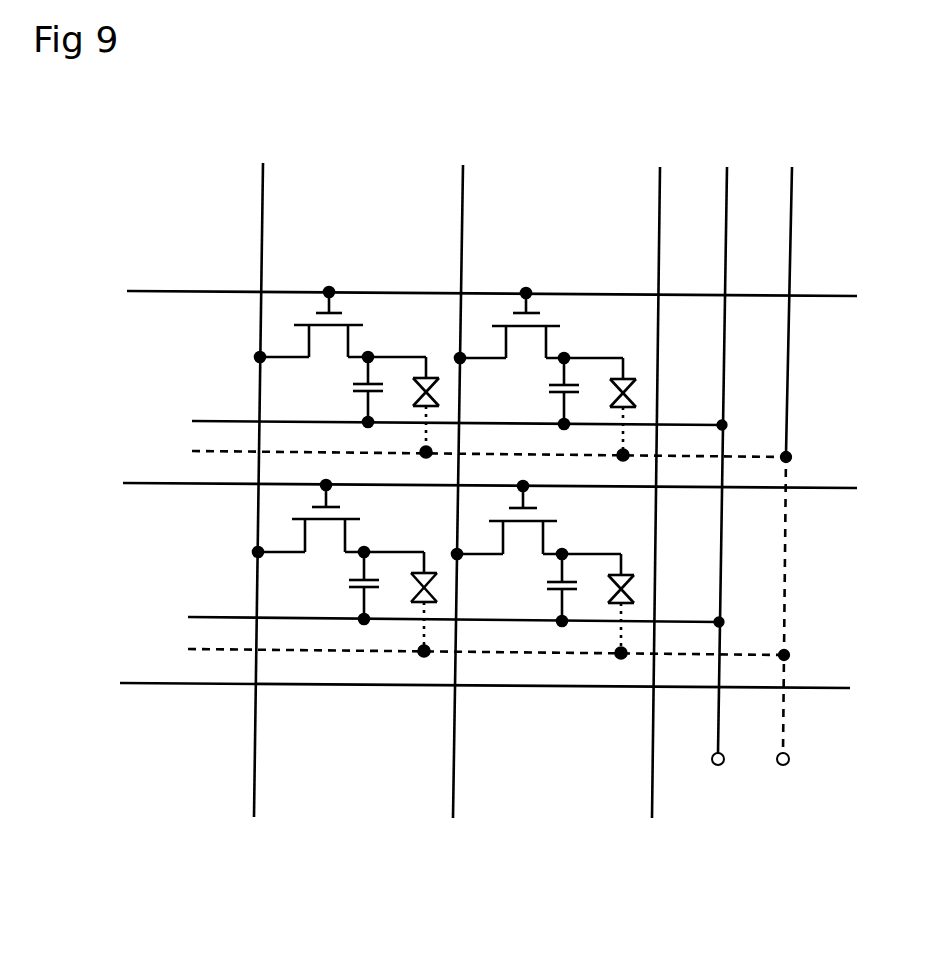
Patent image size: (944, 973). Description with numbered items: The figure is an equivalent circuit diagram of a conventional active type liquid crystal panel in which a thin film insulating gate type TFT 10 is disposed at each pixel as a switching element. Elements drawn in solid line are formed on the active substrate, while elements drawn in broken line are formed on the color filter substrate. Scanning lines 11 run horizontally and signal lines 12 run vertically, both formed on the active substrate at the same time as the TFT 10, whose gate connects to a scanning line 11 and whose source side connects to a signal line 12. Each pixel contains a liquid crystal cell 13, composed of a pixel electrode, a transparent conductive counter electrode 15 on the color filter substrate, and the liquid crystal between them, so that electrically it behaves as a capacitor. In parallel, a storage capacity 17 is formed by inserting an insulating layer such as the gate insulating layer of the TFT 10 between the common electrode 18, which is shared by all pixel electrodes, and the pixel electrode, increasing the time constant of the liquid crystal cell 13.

The TFT 10 is at (345, 313).
The scanning line 11 is at (153, 294).
The signal line 12 is at (265, 193).
The liquid crystal cell 13 is at (436, 388).
The counter electrode 15 is at (785, 775).
The storage capacity 17 is at (343, 388).
The common electrode 18 is at (720, 775).